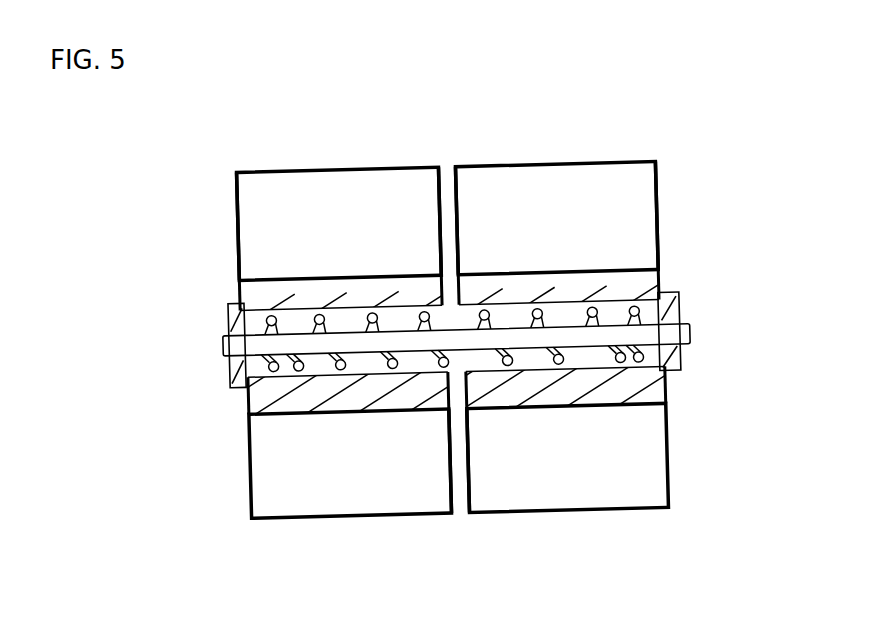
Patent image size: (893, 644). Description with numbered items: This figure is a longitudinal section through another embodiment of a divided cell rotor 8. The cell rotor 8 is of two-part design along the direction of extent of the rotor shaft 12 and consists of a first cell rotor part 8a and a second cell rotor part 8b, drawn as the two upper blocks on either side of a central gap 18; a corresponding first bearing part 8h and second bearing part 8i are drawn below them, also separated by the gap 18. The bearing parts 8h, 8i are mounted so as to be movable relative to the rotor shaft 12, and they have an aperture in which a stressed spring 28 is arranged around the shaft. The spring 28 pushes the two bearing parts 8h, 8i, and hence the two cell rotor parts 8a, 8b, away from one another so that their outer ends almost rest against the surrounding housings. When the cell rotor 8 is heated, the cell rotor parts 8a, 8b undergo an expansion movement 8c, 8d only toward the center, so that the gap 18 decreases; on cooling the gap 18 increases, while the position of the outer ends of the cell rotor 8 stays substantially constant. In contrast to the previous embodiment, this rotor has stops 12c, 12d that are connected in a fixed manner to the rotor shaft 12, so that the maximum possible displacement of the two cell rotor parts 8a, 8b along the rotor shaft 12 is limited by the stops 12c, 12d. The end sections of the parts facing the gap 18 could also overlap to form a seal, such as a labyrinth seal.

The cell rotor 8 is at (660, 128).
The first cell rotor part 8a is at (338, 200).
The second cell rotor part 8b is at (514, 200).
The expansion movement (first end) 8c is at (226, 214).
The expansion movement (second end) 8d is at (669, 195).
The first bearing part 8h is at (287, 397).
The second bearing part 8i is at (610, 408).
The rotor shaft 12 is at (690, 343).
The stop 12c is at (228, 379).
The stop 12d is at (680, 304).
The gap 18 is at (446, 170).
The spring 28 is at (622, 313).